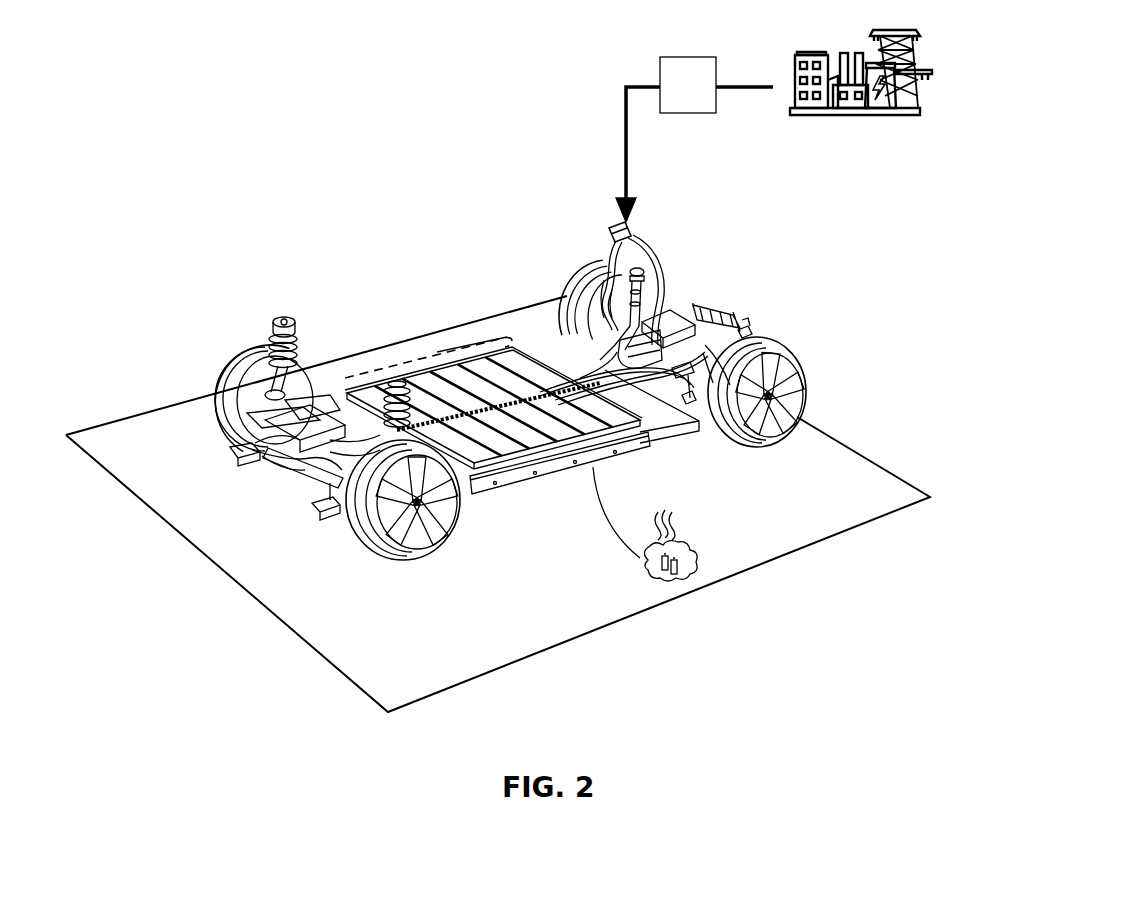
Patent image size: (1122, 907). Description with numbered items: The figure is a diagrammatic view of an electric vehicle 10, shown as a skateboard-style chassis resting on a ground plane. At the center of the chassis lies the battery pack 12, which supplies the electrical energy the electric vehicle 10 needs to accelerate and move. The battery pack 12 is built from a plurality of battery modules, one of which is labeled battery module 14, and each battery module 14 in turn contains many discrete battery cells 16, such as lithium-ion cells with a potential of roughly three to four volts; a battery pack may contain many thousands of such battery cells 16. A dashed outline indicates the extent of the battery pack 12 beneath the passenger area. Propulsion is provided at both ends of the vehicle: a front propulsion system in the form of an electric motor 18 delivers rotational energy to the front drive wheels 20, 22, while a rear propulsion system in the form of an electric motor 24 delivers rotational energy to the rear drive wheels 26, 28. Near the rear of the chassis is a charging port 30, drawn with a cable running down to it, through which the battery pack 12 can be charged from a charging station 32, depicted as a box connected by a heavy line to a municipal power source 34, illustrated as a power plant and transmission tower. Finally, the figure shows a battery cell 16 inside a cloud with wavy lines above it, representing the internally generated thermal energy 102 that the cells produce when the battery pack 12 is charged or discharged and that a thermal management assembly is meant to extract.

The electric vehicle 10 is at (199, 220).
The battery pack 12 is at (430, 352).
The battery module 14 is at (510, 445).
The battery cells 16 is at (697, 563).
The electric motor 18 is at (250, 458).
The front drive wheel 20 is at (205, 400).
The front drive wheel 22 is at (457, 523).
The electric motor 24 is at (680, 322).
The rear drive wheel 26 is at (560, 312).
The rear drive wheel 28 is at (810, 388).
The charging port 30 is at (606, 230).
The charging station 32 is at (694, 139).
The municipal power source 34 is at (805, 52).
The internally generated thermal energy 102 is at (680, 523).